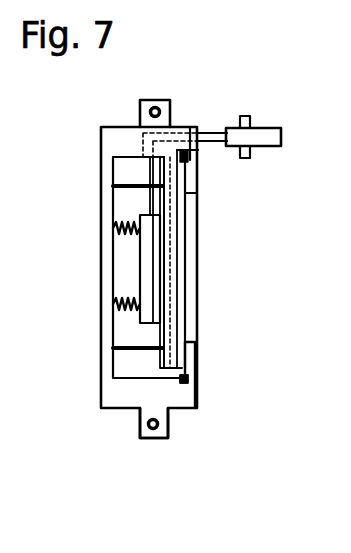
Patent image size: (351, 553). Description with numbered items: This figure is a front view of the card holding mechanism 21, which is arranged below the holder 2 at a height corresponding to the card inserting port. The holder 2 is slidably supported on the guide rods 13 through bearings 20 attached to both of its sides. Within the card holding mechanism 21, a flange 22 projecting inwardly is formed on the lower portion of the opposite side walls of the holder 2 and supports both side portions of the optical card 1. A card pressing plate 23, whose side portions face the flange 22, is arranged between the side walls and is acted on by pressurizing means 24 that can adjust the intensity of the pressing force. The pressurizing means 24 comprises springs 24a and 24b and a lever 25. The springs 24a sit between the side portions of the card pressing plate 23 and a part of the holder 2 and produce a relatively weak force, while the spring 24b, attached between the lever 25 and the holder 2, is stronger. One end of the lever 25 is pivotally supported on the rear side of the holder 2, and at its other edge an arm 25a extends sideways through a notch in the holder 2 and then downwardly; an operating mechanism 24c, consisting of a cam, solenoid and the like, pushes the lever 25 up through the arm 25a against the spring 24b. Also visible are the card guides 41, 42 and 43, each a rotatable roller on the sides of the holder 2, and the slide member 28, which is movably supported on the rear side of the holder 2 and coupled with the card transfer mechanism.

The holder 2 is at (101, 127).
The guide rods 13 is at (157, 107).
The bearings 20 is at (170, 105).
The card pressing plate 23 is at (163, 168).
The arm 25a is at (213, 130).
The operating mechanism 24c is at (280, 128).
The card guide 43 is at (197, 156).
The flange 22 is at (197, 193).
The slide member 28 is at (334, 222).
The optical card 1 is at (185, 260).
The card holding mechanism 21 is at (188, 284).
The card guide 42 is at (192, 380).
The card guide 41 is at (184, 379).
The springs 24a is at (113, 188).
The spring 24b is at (120, 236).
The pressurizing means 24 is at (117, 258).
The lever 25 is at (145, 272).